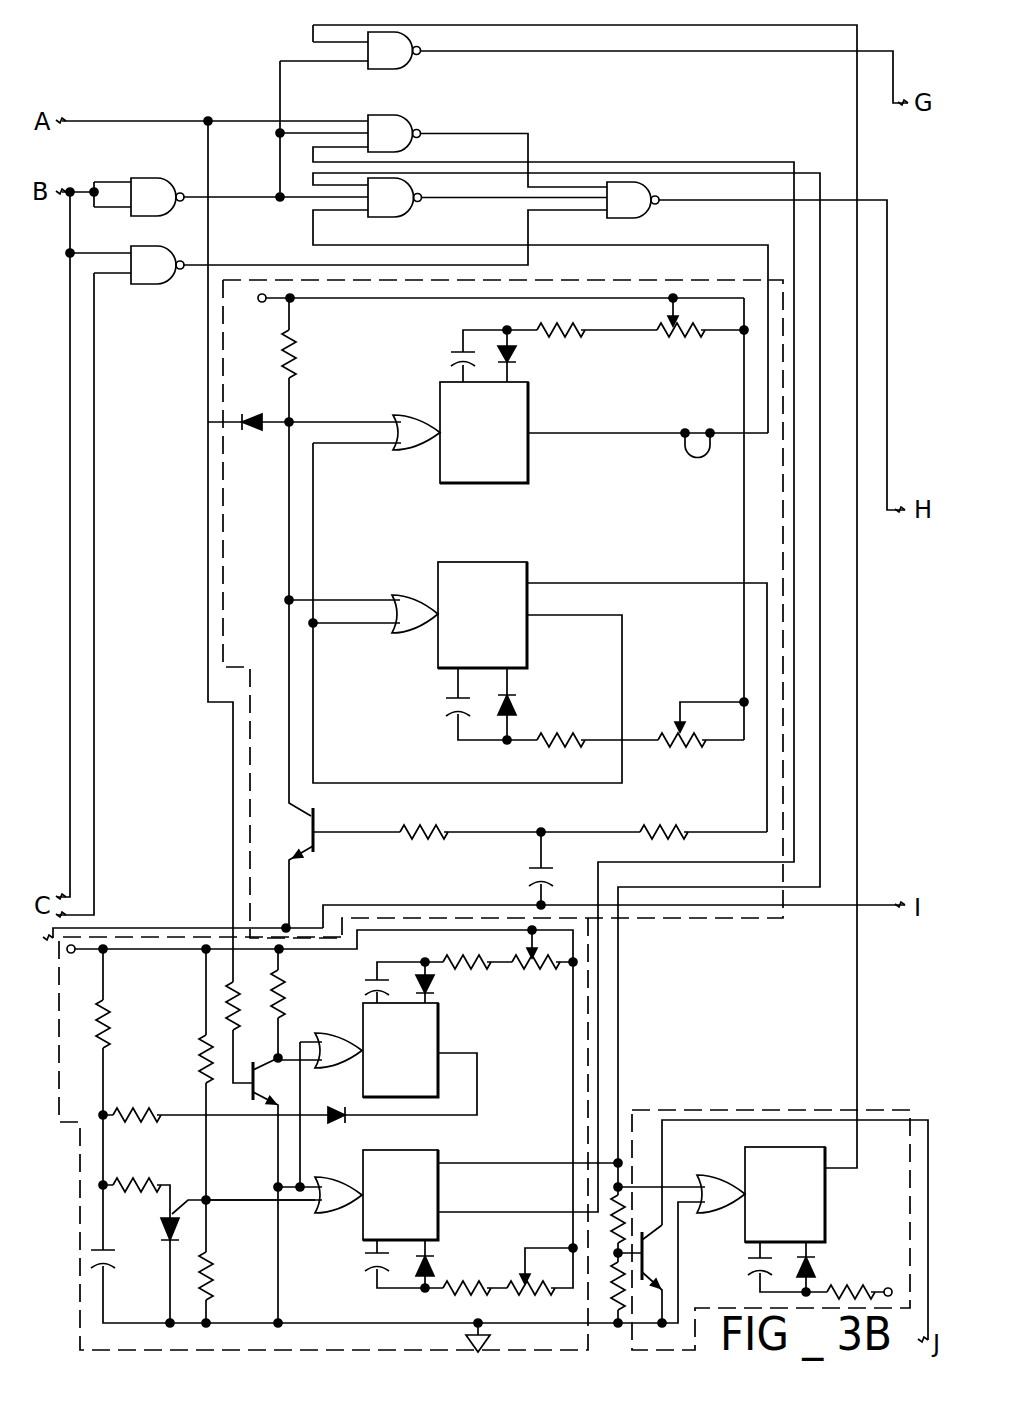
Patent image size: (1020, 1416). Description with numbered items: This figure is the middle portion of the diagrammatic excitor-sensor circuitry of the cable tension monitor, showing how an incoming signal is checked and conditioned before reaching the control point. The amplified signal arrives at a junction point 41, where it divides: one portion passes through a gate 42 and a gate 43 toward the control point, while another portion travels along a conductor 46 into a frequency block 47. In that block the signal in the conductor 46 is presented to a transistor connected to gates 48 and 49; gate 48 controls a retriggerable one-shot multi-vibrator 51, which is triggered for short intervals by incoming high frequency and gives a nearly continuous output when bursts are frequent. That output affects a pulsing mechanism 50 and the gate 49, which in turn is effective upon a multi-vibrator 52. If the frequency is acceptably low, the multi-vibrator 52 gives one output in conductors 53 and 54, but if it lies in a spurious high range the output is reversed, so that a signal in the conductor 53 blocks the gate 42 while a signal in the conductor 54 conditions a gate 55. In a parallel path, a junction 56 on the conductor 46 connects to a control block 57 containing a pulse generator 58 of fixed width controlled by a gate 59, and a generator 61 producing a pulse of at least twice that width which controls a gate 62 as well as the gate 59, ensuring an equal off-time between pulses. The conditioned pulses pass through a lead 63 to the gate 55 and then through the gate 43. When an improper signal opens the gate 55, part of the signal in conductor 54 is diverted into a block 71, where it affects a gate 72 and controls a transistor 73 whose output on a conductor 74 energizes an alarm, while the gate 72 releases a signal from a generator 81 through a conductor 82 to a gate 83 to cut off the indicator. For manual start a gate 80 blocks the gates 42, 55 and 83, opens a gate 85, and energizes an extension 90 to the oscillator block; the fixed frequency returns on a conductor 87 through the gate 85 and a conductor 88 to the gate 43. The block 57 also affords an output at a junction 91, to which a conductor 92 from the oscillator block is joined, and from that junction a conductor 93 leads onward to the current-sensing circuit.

The junction point 41 is at (221, 586).
The gate 42 is at (412, 118).
The gate 43 is at (652, 214).
The conductor 46 is at (212, 362).
The frequency block 47 is at (78, 1165).
The gate 48 is at (320, 1033).
The gate 49 is at (330, 1177).
The pulsing mechanism 50 is at (178, 1205).
The retriggerable one-shot multi-vibrator 51 is at (438, 1015).
The multi-vibrator 52 is at (438, 1153).
The conductor 53 is at (750, 162).
The conductor 54 is at (499, 172).
The gate 55 is at (404, 213).
The junction 56 is at (207, 421).
The control block 57 is at (223, 485).
The pulse generator 58 is at (530, 412).
The gate 59 is at (403, 455).
The generator 61 is at (524, 563).
The gate 62 is at (400, 592).
The lead 63 is at (624, 433).
The block 71 is at (750, 1112).
The gate 72 is at (715, 1214).
The transistor 73 is at (665, 1258).
The conductor 74 is at (668, 1143).
The gate 80 is at (158, 167).
The generator 81 is at (828, 1208).
The conductor 82 is at (312, 32).
The gate 83 is at (412, 64).
The gate 85 is at (149, 284).
The conductor 87 is at (95, 470).
The conductor 88 is at (245, 262).
The extension 90 is at (70, 474).
The junction 91 is at (288, 925).
The conductor 92 is at (118, 928).
The conductor 93 is at (423, 905).